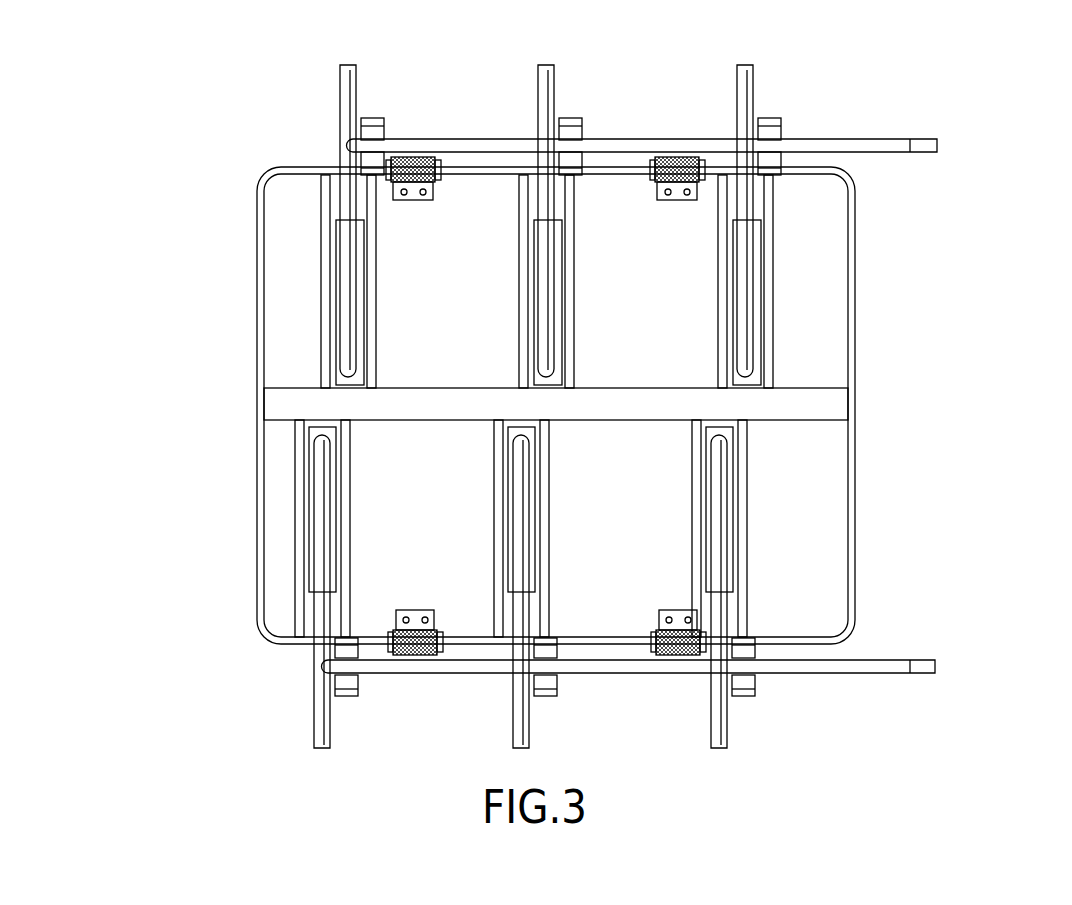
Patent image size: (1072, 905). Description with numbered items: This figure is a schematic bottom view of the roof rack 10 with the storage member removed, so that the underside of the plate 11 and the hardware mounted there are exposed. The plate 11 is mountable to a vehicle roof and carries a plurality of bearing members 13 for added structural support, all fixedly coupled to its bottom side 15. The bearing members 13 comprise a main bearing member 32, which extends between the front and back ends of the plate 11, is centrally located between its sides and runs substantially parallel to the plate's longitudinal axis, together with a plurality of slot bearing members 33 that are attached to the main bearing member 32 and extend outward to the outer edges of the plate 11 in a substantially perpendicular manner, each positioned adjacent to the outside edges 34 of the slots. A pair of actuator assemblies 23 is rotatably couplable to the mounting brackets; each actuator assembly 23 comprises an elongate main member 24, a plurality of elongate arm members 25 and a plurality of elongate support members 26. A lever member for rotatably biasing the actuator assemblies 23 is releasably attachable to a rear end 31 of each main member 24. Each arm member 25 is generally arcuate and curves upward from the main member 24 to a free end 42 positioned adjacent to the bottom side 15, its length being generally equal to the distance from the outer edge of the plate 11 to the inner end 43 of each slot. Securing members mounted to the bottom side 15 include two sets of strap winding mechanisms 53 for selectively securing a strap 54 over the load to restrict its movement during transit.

The roof rack 10 is at (947, 115).
The plate 11 is at (275, 167).
The bearing members 13 is at (322, 332).
The bottom side 15 is at (295, 213).
The actuator assemblies 23 is at (537, 123).
The main member 24 is at (600, 146).
The arm members 25 is at (748, 193).
The support members 26 is at (747, 108).
The rear end 31 is at (920, 145).
The main bearing member 32 is at (310, 405).
The slot bearing members 33 is at (330, 353).
The outside edges 34 is at (335, 280).
The free end 42 is at (748, 370).
The inner end 43 is at (750, 390).
The strap winding mechanisms 53 is at (438, 165).
The strap 54 is at (408, 160).